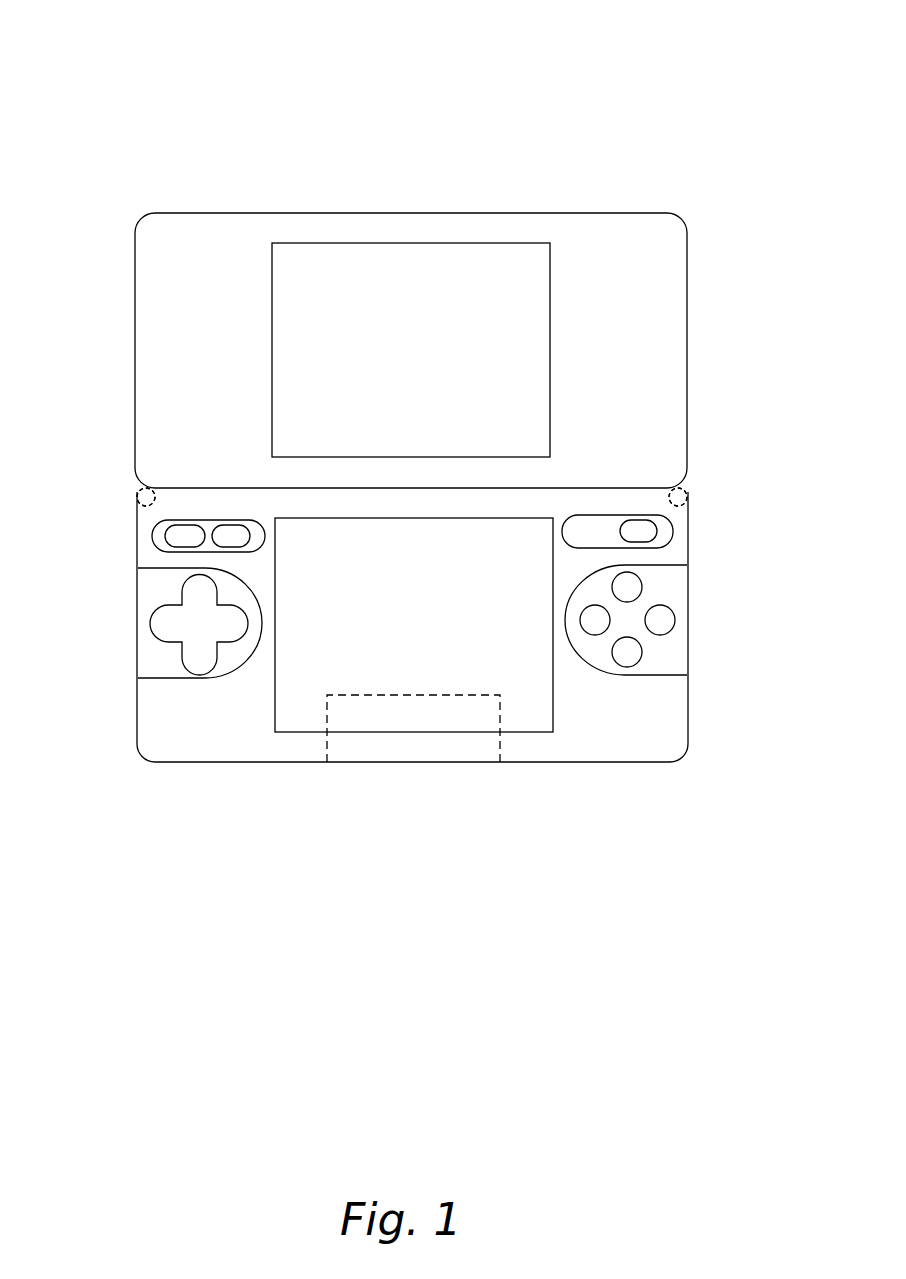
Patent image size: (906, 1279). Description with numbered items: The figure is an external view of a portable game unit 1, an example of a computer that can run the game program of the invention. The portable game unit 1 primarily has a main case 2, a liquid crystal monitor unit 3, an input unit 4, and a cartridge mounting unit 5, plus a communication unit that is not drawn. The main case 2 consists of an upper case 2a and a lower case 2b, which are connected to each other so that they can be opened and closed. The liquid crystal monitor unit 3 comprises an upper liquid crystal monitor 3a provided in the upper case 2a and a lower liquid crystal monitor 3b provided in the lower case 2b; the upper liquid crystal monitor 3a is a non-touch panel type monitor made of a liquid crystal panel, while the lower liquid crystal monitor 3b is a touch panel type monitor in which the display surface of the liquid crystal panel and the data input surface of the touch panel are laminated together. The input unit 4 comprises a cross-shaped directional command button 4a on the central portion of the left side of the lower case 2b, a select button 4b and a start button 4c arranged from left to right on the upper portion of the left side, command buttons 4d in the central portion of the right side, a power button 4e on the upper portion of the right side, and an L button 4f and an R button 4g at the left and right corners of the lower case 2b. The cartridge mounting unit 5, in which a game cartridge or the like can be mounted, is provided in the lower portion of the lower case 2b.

The portable game unit 1 is at (682, 130).
The main case 2 is at (700, 323).
The upper case 2a is at (640, 378).
The lower case 2b is at (675, 712).
The liquid crystal monitor unit 3 is at (390, 228).
The upper liquid crystal monitor 3a is at (445, 280).
The lower liquid crystal monitor 3b is at (530, 708).
The input unit 4 is at (185, 714).
The cross-shaped directional command button 4a is at (162, 628).
The select button 4b is at (172, 536).
The start button 4c is at (228, 538).
The command buttons 4d is at (672, 590).
The power button 4e is at (645, 531).
The L button 4f is at (140, 489).
The R button 4g is at (692, 489).
The cartridge mounting unit 5 is at (497, 743).